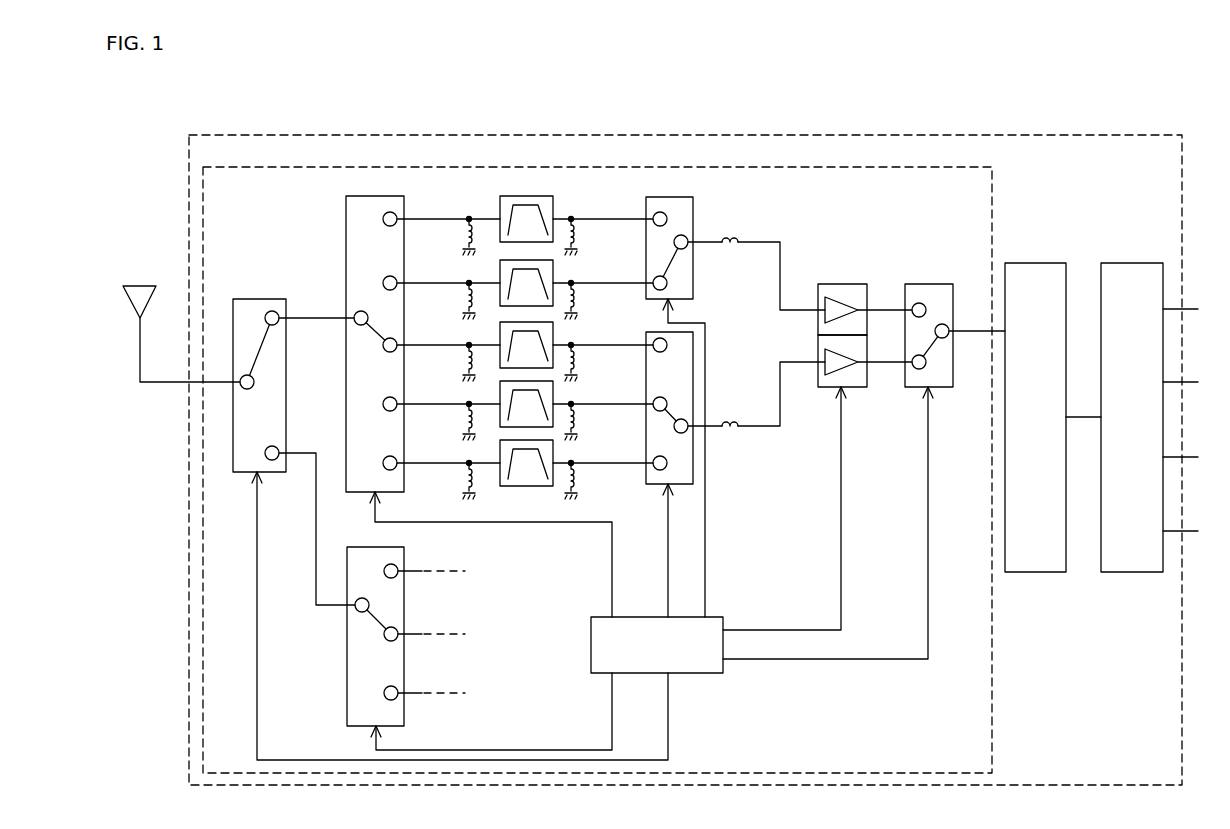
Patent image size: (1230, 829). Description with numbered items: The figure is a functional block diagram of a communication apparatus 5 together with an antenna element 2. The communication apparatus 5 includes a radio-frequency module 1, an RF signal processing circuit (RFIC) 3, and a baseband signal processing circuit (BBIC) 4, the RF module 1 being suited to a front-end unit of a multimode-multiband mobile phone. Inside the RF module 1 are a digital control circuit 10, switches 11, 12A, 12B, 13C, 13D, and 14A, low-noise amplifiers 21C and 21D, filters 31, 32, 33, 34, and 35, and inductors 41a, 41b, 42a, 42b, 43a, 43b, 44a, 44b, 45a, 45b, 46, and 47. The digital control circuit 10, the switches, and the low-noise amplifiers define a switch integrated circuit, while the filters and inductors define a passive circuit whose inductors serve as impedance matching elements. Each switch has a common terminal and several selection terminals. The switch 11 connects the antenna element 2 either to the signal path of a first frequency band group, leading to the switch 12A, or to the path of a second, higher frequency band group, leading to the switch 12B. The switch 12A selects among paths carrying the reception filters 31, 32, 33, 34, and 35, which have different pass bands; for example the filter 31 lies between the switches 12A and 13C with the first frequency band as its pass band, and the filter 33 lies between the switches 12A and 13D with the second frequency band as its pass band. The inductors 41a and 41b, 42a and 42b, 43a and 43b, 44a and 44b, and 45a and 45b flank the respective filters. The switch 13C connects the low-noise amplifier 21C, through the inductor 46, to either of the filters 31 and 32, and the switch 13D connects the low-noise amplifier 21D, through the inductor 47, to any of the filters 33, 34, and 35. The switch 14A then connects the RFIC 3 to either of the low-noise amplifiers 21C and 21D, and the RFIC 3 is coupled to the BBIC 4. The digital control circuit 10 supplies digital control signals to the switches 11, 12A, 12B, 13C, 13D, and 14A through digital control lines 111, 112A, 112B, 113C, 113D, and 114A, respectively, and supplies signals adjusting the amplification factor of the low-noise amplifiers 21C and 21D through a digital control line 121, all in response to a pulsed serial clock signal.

The radio-frequency (RF) module 1 is at (955, 167).
The antenna element 2 is at (147, 286).
The RF signal processing circuit (RFIC) 3 is at (1028, 263).
The baseband signal processing circuit (BBIC) 4 is at (1128, 263).
The communication apparatus 5 is at (1143, 135).
The digital control circuit 10 is at (718, 617).
The switch 11 is at (268, 299).
The switch 12A is at (386, 196).
The switch 12B is at (404, 549).
The switch 13C is at (682, 197).
The switch 13D is at (693, 376).
The switch 14A is at (925, 284).
The low-noise amplifier 21C is at (850, 284).
The low-noise amplifier 21D is at (862, 387).
The filter 31 is at (553, 210).
The filter 32 is at (553, 274).
The filter 33 is at (553, 336).
The filter 34 is at (553, 395).
The filter 35 is at (553, 454).
The inductor 41a is at (466, 239).
The inductor 41b is at (576, 241).
The inductor 42a is at (466, 303).
The inductor 42b is at (576, 305).
The inductor 43a is at (466, 365).
The inductor 43b is at (576, 367).
The inductor 44a is at (466, 424).
The inductor 44b is at (576, 426).
The inductor 45a is at (466, 483).
The inductor 45b is at (576, 485).
The inductor 46 is at (734, 252).
The inductor 47 is at (734, 436).
The digital control line 111 is at (668, 700).
The digital control line 112A is at (612, 598).
The digital control line 112B is at (612, 689).
The digital control line 113C is at (705, 522).
The digital control line 113D is at (668, 572).
The digital control line 114A is at (928, 497).
The digital control line 121 is at (841, 505).